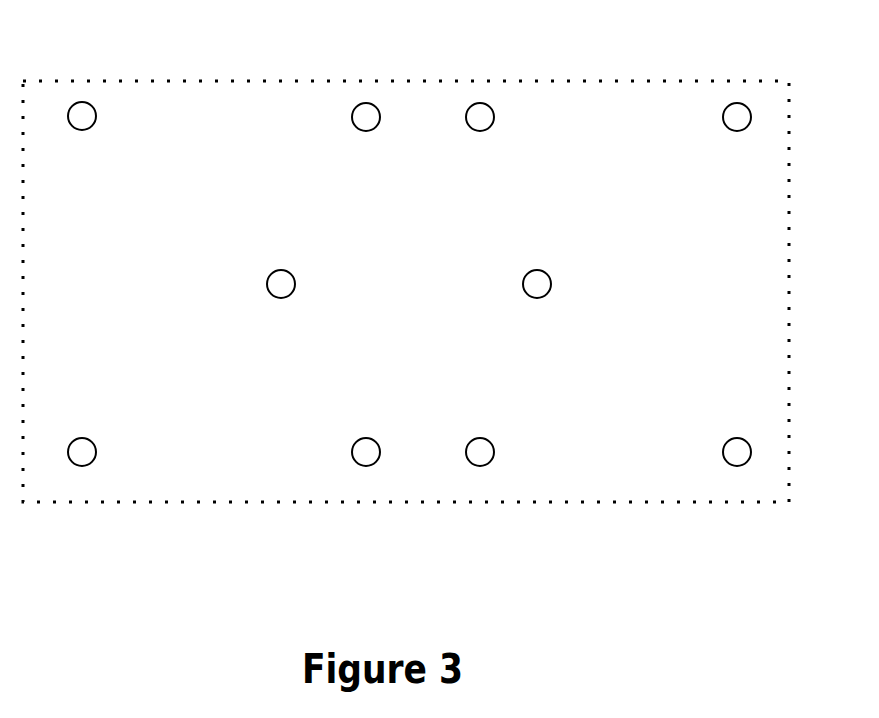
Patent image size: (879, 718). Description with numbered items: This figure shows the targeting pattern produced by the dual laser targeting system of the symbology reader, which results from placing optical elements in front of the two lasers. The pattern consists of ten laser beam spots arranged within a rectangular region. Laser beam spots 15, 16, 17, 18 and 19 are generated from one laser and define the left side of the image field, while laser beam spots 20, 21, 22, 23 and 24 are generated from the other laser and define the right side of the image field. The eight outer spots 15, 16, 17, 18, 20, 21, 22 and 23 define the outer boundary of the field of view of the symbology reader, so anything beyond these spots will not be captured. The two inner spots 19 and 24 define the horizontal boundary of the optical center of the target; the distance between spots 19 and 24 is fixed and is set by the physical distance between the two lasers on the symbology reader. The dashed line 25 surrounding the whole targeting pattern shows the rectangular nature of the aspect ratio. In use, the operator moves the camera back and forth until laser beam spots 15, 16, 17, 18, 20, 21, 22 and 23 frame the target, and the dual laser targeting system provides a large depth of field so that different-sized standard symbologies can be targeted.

The laser beam spot 15 is at (54, 78).
The laser beam spot 16 is at (453, 79).
The laser beam spot 17 is at (114, 417).
The laser beam spot 18 is at (452, 417).
The laser beam spot 19 is at (256, 246).
The laser beam spot 20 is at (338, 79).
The laser beam spot 21 is at (709, 79).
The laser beam spot 22 is at (337, 417).
The laser beam spot 23 is at (706, 417).
The laser beam spot 24 is at (510, 246).
The dashed line 25 is at (439, 291).